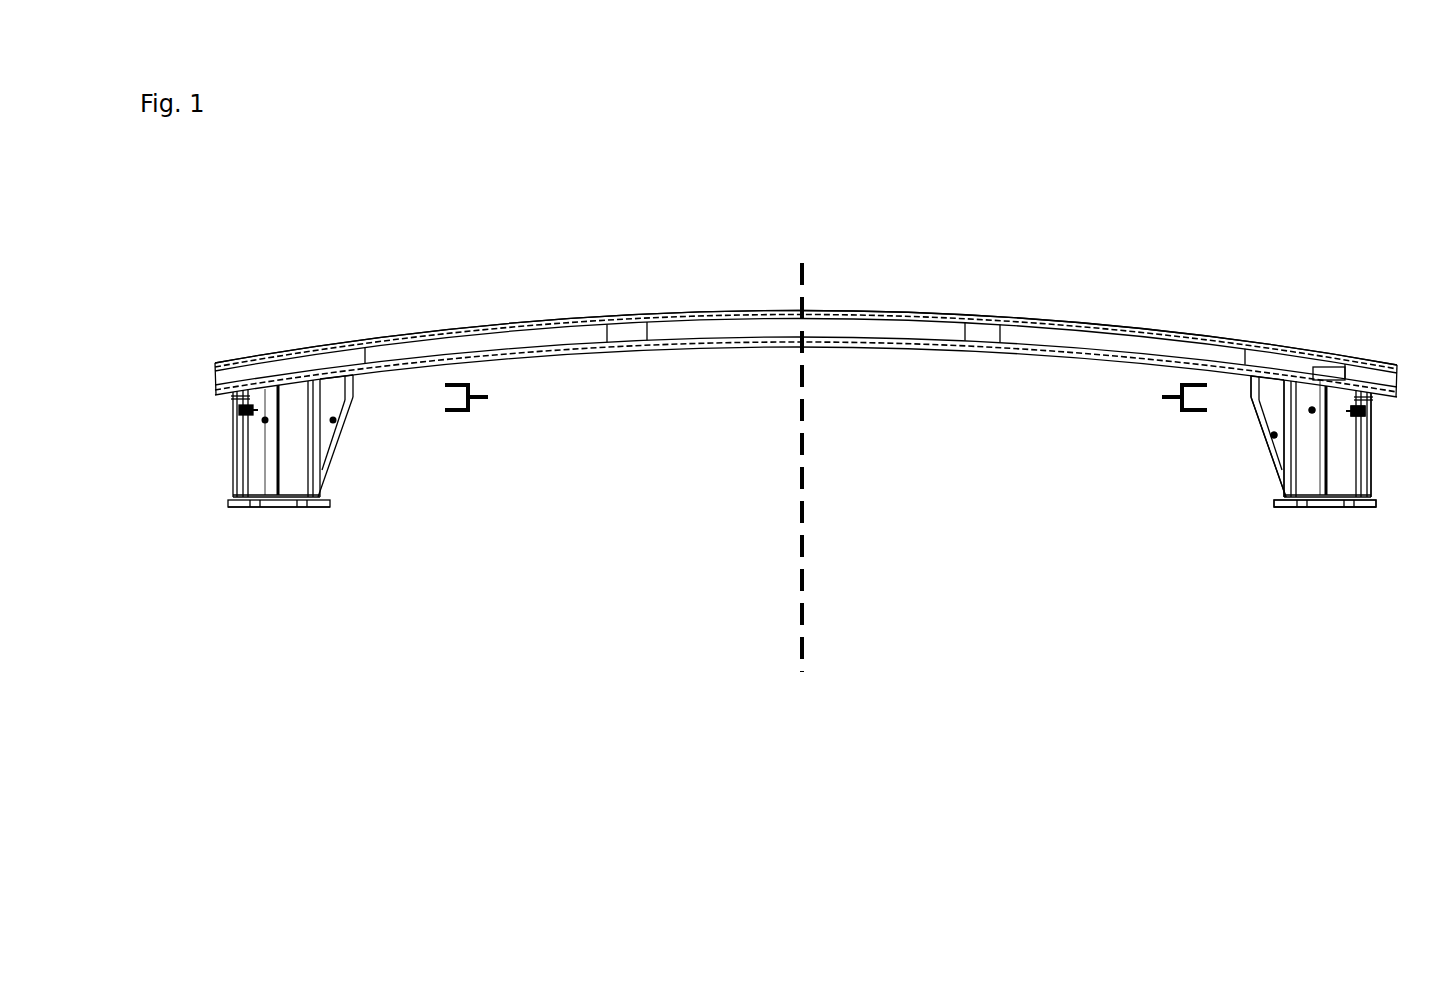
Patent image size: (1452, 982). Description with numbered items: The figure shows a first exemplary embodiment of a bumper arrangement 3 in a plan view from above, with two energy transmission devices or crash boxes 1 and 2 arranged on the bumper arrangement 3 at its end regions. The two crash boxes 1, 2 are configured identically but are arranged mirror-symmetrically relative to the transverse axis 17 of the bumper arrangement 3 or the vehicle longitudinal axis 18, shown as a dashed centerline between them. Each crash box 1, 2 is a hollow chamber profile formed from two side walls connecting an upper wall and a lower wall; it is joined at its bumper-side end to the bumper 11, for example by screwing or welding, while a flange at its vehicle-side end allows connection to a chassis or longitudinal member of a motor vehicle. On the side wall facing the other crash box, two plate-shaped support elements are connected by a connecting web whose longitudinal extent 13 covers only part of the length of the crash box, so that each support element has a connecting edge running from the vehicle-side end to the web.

The crash box 1 is at (182, 553).
The crash box 2 is at (1351, 655).
The bumper arrangement 3 is at (497, 190).
The bumper 11 is at (720, 322).
The longitudinal extent 13 is at (826, 398).
The transverse axis 17 is at (805, 510).
The vehicle longitudinal axis 18 is at (805, 510).